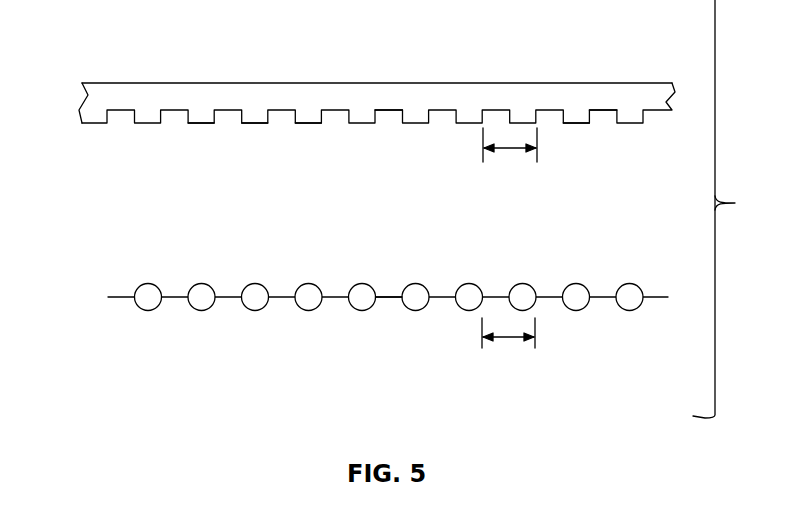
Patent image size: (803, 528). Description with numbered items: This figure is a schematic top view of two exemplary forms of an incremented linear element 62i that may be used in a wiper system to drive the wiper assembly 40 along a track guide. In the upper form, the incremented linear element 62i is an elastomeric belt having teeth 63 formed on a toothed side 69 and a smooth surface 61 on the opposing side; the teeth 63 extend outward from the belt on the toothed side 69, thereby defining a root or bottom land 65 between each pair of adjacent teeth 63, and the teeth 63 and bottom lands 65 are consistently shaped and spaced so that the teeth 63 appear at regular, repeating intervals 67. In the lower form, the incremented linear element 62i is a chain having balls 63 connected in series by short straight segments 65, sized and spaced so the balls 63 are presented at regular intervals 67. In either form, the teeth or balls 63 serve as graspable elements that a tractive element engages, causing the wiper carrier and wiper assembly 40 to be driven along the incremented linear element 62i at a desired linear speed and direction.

The incremented linear element 62i is at (163, 50).
The smooth surface 61 is at (447, 83).
The graspable elements 63 is at (197, 123).
The root or bottom land 65 is at (387, 110).
The regular intervals 67 is at (512, 150).
The toothed side 69 is at (570, 123).
The wiper assembly 40 is at (748, 264).